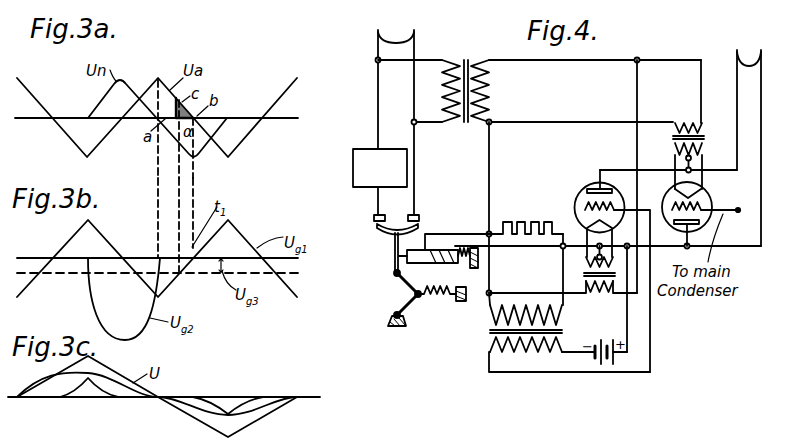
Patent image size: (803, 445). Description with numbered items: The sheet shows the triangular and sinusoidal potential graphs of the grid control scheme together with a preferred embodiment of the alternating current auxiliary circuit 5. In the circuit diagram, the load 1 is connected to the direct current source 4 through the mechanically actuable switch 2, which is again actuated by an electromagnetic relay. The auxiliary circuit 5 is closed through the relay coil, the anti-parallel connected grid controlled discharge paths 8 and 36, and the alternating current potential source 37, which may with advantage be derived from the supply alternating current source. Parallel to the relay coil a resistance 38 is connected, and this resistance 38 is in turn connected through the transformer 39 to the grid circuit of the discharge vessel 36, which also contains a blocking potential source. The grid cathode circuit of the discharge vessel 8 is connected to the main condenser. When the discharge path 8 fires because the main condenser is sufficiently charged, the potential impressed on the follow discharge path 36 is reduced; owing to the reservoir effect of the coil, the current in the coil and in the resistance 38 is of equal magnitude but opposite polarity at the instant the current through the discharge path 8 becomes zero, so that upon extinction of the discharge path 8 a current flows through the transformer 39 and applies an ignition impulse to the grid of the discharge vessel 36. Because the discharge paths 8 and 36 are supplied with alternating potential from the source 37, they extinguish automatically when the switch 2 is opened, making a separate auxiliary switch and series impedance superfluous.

The load 1 is at (365, 149).
The mechanically actuable switch 2 is at (381, 229).
The direct current source 4 is at (396, 112).
The auxiliary circuit 5 is at (660, 194).
The gas-filled controllable discharge path 8 is at (704, 195).
The grid controlled discharge path 36 is at (591, 183).
The alternating current potential source 37 is at (749, 139).
The resistance 38 is at (533, 222).
The transformer 39 is at (563, 331).